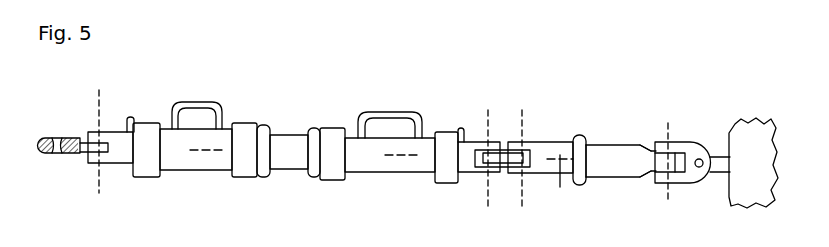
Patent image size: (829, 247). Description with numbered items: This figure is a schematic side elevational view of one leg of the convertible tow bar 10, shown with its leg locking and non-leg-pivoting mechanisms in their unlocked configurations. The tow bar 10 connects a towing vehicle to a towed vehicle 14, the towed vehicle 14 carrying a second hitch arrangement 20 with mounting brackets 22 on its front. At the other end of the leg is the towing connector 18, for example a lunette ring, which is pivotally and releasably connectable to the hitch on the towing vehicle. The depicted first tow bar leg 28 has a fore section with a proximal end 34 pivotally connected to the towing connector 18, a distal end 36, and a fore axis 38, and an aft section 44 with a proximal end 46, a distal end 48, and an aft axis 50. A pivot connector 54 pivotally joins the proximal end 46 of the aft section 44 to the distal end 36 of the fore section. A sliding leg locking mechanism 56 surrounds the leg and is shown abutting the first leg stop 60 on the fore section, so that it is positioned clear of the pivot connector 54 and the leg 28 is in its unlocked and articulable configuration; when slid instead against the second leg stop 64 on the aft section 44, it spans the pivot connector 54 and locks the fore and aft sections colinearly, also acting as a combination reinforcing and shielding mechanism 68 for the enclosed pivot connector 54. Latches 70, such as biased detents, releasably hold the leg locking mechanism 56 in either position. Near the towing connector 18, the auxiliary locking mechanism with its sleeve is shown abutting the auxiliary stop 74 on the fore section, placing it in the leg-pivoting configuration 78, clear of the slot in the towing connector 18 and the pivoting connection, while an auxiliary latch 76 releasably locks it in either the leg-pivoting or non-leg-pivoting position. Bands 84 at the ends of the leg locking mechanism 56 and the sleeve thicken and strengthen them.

The convertible tow bar 10 is at (620, 76).
The towed vehicle 14 is at (768, 173).
The towing connector 18 is at (45, 153).
The second hitch arrangement 20 is at (721, 194).
The mounting brackets 22 is at (719, 172).
The first tow bar leg 28 is at (290, 135).
The proximal end 34 is at (117, 132).
The distal end 36 is at (470, 167).
The fore axis 38 is at (417, 157).
The aft section 44 is at (628, 149).
The proximal end 46 is at (537, 143).
The distal end 48 is at (636, 177).
The aft axis 50 is at (559, 182).
The pivot connector 54 is at (502, 172).
The leg locking mechanism 56 is at (390, 162).
The first leg stop 60 is at (340, 130).
The second leg stop 64 is at (593, 138).
The combination reinforcing and shielding mechanism 68 is at (382, 162).
The latches 70 is at (465, 128).
The auxiliary stop 74 is at (265, 125).
The auxiliary latch 76 is at (131, 118).
The leg-pivoting configuration 78 is at (218, 68).
The bands 84 is at (146, 177).